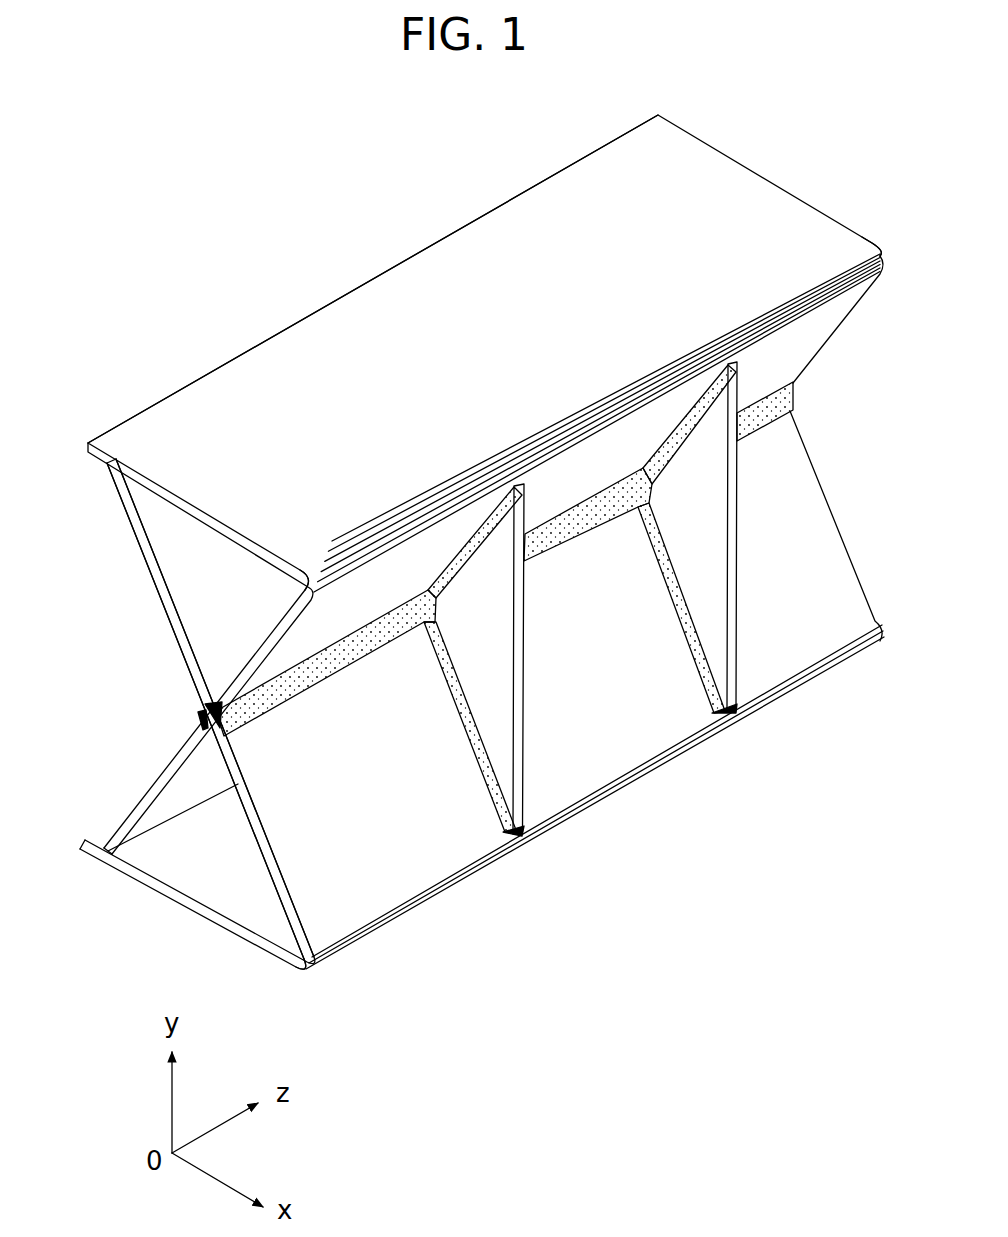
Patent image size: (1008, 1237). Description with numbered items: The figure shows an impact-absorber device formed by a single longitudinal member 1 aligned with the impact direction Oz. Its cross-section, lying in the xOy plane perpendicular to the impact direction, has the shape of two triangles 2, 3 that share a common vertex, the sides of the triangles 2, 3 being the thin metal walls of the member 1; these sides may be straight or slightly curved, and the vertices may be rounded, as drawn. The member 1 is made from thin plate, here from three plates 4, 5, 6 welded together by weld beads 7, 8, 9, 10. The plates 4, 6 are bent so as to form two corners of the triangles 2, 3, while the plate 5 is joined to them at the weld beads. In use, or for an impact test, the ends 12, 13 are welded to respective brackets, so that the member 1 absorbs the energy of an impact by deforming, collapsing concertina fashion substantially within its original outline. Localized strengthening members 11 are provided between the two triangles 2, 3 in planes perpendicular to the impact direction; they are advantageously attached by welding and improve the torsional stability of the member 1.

The longitudinal member 1 is at (405, 248).
The triangle 2 is at (202, 618).
The triangle 3 is at (186, 826).
The plate 4 is at (223, 388).
The plate 5 is at (150, 570).
The plate 6 is at (200, 913).
The weld bead 7 is at (108, 474).
The weld bead 8 is at (195, 719).
The weld bead 9 is at (273, 698).
The weld bead 10 is at (105, 862).
The localized strengthening member 11 is at (503, 654).
The end 12 is at (228, 508).
The end 13 is at (782, 176).